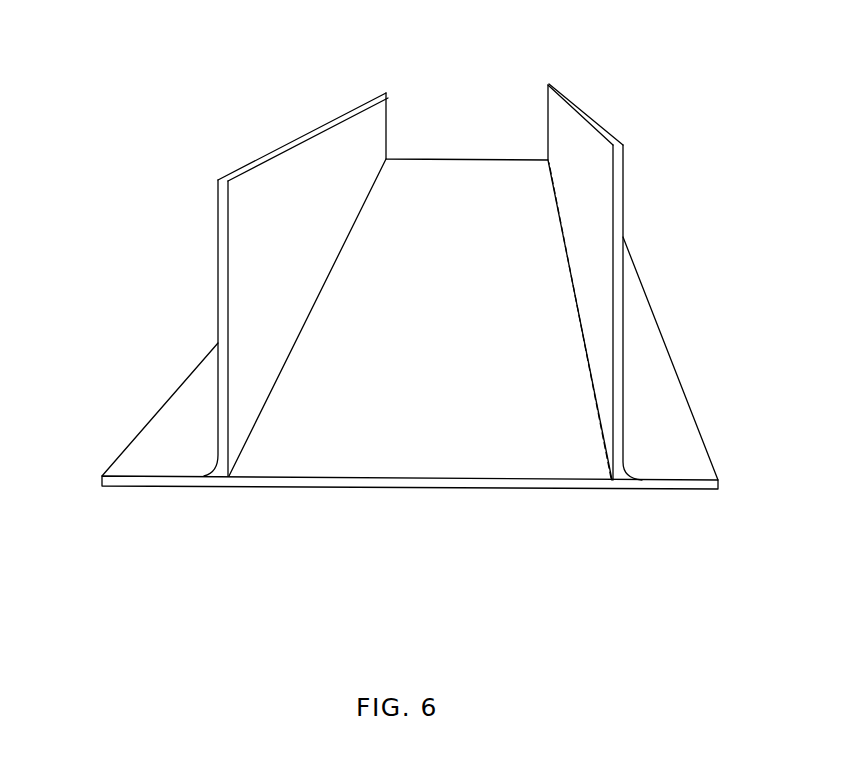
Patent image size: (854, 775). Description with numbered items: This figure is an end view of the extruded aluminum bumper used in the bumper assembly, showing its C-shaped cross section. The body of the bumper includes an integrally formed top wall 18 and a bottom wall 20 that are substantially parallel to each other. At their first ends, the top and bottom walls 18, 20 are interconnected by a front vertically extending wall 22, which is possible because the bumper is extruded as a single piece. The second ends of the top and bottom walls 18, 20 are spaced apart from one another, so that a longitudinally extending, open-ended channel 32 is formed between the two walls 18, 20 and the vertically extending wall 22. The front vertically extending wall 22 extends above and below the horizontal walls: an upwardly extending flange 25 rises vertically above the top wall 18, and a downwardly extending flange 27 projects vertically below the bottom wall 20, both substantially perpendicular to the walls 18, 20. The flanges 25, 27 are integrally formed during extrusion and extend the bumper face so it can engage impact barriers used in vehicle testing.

The top wall 18 is at (221, 293).
The bottom wall 20 is at (620, 315).
The front vertically extending wall 22 is at (442, 489).
The upwardly extending flange 25 is at (684, 441).
The downwardly extending flange 27 is at (142, 435).
The channel 32 is at (548, 85).